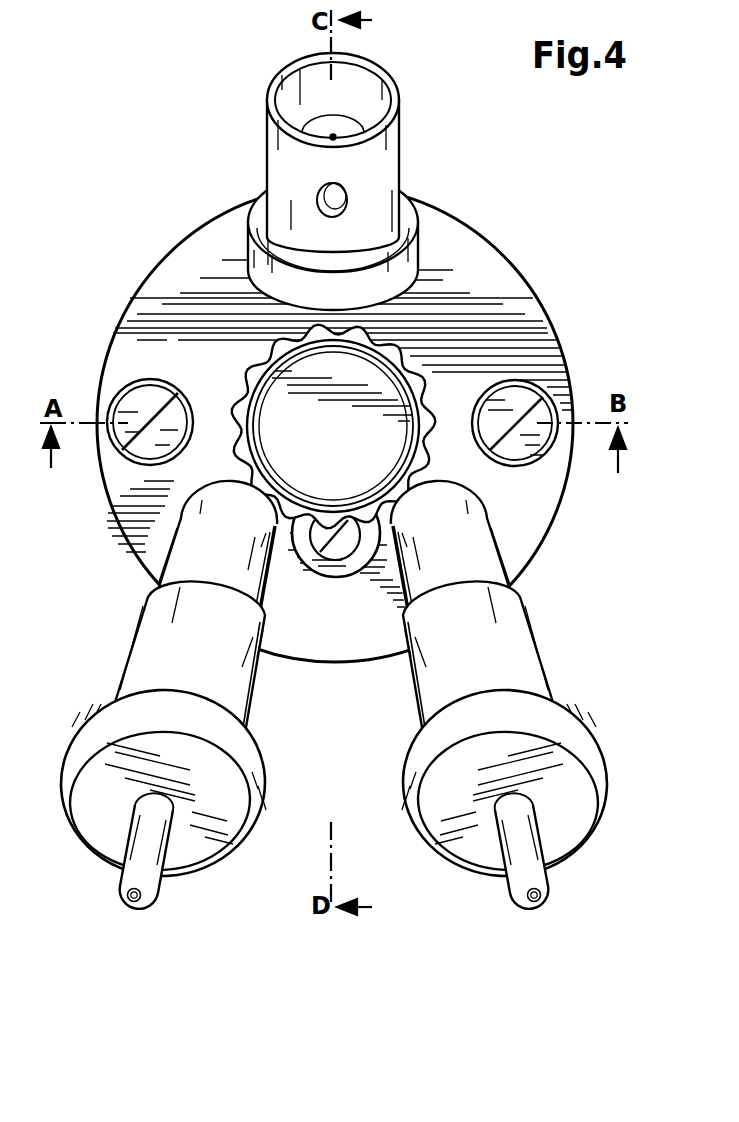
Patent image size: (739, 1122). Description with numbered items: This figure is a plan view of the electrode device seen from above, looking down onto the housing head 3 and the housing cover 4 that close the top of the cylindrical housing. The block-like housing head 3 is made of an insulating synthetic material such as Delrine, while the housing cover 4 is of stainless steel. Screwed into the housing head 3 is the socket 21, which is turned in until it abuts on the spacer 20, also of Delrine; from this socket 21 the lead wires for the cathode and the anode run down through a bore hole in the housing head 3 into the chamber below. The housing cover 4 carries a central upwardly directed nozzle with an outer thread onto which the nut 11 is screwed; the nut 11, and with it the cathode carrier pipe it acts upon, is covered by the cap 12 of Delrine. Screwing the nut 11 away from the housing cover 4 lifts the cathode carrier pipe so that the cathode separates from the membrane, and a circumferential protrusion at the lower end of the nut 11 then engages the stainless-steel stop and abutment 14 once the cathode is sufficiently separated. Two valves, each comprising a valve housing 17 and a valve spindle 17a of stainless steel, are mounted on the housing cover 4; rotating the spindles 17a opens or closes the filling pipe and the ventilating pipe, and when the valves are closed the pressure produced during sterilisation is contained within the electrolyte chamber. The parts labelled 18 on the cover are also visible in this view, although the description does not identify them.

The housing head 3 is at (495, 263).
The housing cover 4 is at (550, 347).
The nut 11 is at (245, 400).
The cap 12 is at (273, 405).
The stop and abutment 14 is at (343, 563).
The valve housing 17 is at (406, 686).
The valve spindle 17a is at (413, 765).
The fastening screws 18 is at (118, 447).
The spacer 20 is at (250, 262).
The socket 21 is at (372, 82).